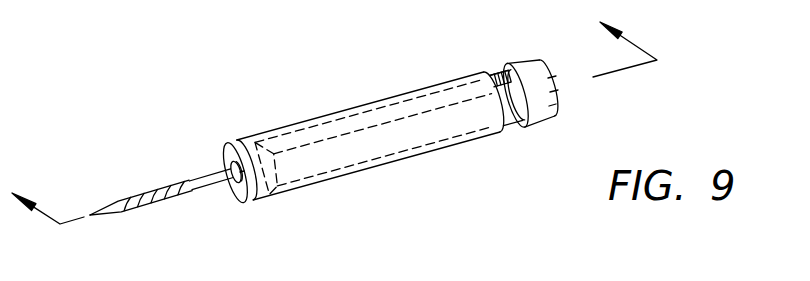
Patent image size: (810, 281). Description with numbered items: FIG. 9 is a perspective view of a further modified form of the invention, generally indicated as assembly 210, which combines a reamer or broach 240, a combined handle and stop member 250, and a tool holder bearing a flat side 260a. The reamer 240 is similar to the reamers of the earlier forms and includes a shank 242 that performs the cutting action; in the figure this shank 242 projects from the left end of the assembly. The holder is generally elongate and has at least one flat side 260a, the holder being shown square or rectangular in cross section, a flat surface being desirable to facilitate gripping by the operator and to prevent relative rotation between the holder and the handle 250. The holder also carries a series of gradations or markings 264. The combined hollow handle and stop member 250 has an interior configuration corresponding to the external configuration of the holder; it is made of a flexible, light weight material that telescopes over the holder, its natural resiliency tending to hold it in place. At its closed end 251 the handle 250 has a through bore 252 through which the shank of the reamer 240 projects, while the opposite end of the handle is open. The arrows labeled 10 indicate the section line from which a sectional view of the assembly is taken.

The section line indicator 10 is at (335, 112).
The modified form of the invention 210 is at (338, 141).
The reamer or broach 240 is at (184, 190).
The shank 242 is at (143, 206).
The combined handle and stop member 250 is at (267, 192).
The closed end 251 is at (245, 193).
The through bore 252 is at (232, 170).
The flat side 260a is at (515, 107).
The gradations or markings 264 is at (497, 76).